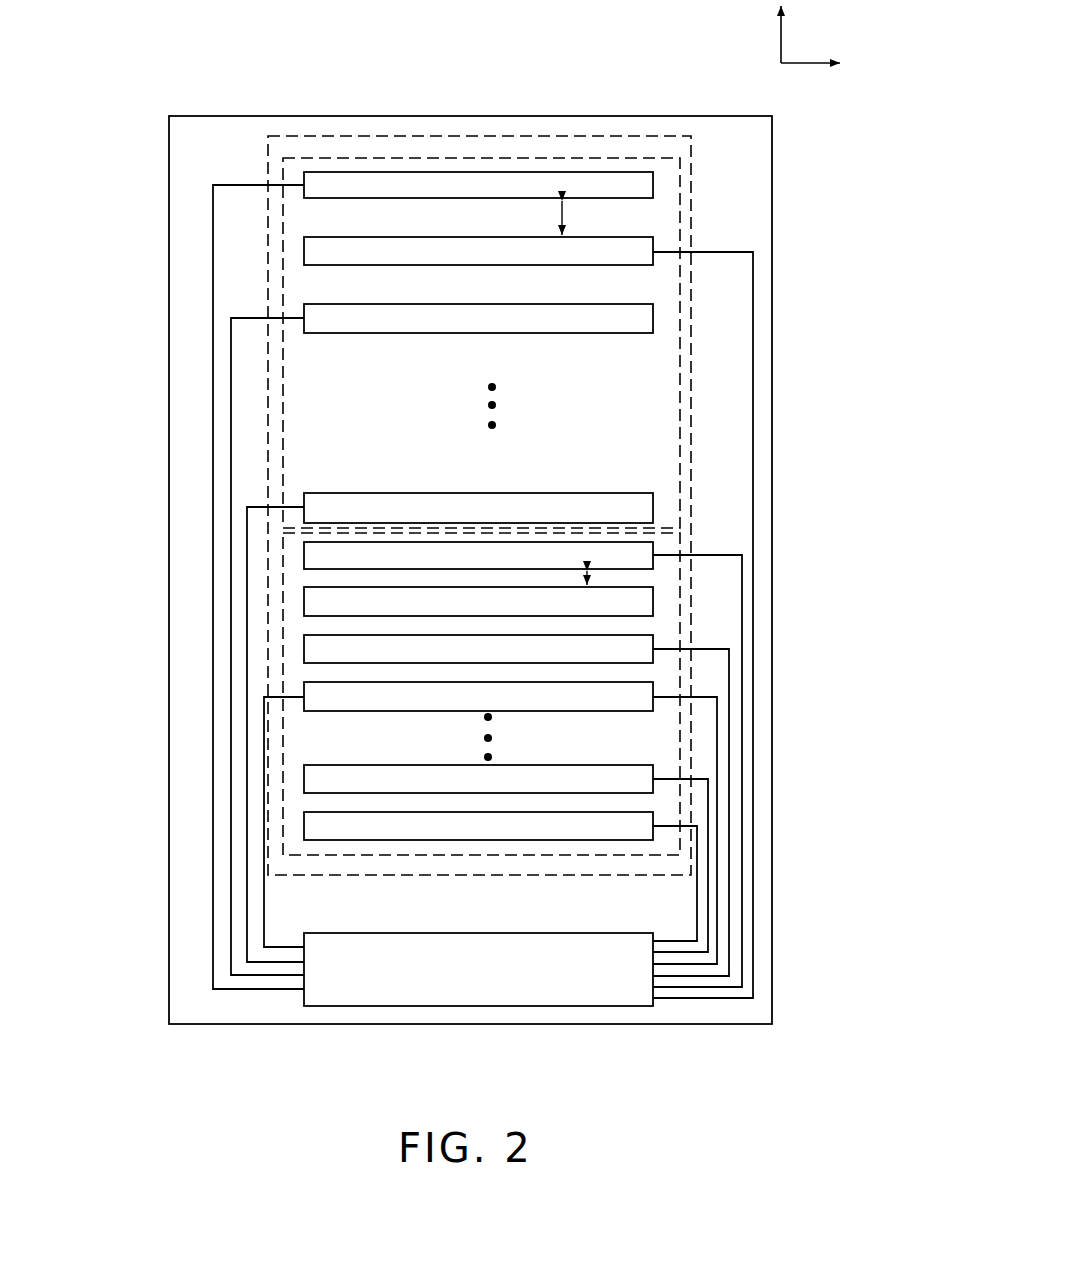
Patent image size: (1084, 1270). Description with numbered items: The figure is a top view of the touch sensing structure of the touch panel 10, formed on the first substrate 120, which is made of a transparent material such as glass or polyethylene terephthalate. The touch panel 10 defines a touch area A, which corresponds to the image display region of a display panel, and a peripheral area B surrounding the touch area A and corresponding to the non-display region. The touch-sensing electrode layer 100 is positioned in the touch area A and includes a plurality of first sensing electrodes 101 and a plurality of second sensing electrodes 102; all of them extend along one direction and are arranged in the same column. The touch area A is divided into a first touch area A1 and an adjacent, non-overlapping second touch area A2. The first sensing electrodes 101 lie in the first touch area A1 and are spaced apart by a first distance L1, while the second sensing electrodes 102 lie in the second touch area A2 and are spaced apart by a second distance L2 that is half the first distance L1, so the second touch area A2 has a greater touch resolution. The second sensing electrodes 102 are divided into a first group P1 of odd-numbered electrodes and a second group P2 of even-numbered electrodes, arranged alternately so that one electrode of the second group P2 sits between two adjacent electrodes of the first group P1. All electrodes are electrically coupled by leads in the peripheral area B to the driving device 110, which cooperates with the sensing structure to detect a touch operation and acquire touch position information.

The touch panel 10 is at (248, 31).
The first substrate 120 is at (750, 140).
The touch-sensing electrode layer 100 is at (662, 180).
The first sensing electrodes 101 is at (656, 186).
The second sensing electrodes 102 is at (656, 553).
The driving device 110 is at (409, 1007).
The touch area A is at (674, 866).
The first touch area A1 is at (688, 358).
The second touch area A2 is at (680, 585).
The peripheral area B is at (758, 948).
The first group P1 is at (304, 555).
The second group P2 is at (655, 826).
The first distance L1 is at (581, 218).
The second distance L2 is at (606, 580).